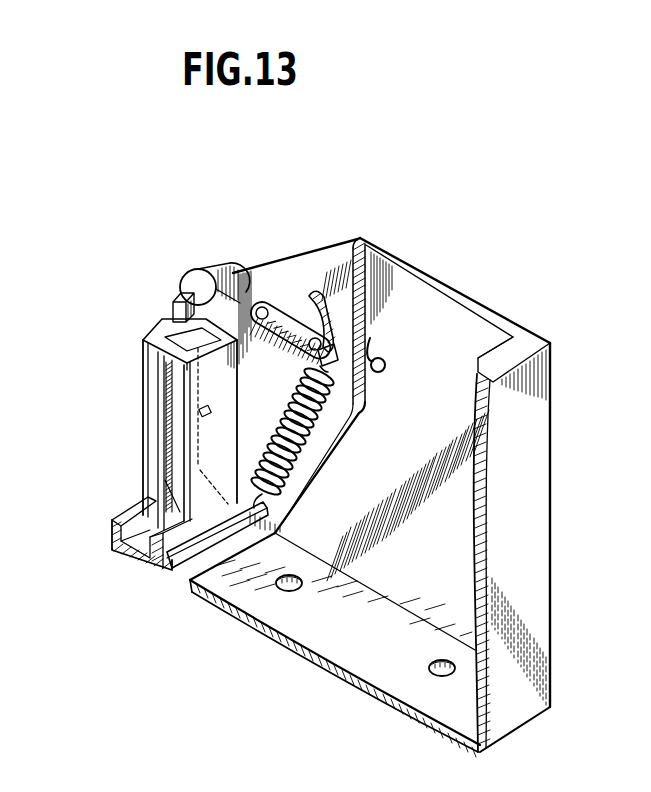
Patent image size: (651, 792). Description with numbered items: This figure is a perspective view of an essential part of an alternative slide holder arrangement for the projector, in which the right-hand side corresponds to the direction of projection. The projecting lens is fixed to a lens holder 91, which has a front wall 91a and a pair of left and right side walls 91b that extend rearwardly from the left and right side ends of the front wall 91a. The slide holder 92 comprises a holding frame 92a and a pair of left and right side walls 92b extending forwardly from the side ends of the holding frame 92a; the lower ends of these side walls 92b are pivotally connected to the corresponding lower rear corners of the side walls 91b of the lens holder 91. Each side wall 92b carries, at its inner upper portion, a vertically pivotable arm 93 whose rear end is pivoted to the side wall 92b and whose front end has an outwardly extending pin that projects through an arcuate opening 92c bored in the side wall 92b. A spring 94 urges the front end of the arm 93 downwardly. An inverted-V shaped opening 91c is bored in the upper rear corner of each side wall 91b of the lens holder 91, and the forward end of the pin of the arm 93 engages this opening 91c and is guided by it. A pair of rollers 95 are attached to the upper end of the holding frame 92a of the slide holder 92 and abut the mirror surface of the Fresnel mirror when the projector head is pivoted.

The lens holder 91 is at (405, 497).
The front wall 91a is at (540, 469).
The side wall 91b is at (448, 316).
The inverted-V shaped opening 91c is at (386, 358).
The slide holder 92 is at (195, 389).
The holding frame 92a is at (147, 405).
The side wall 92b is at (290, 272).
The arcuate opening 92c is at (318, 292).
The arm 93 is at (263, 302).
The spring 94 is at (307, 440).
The roller 95 is at (201, 268).